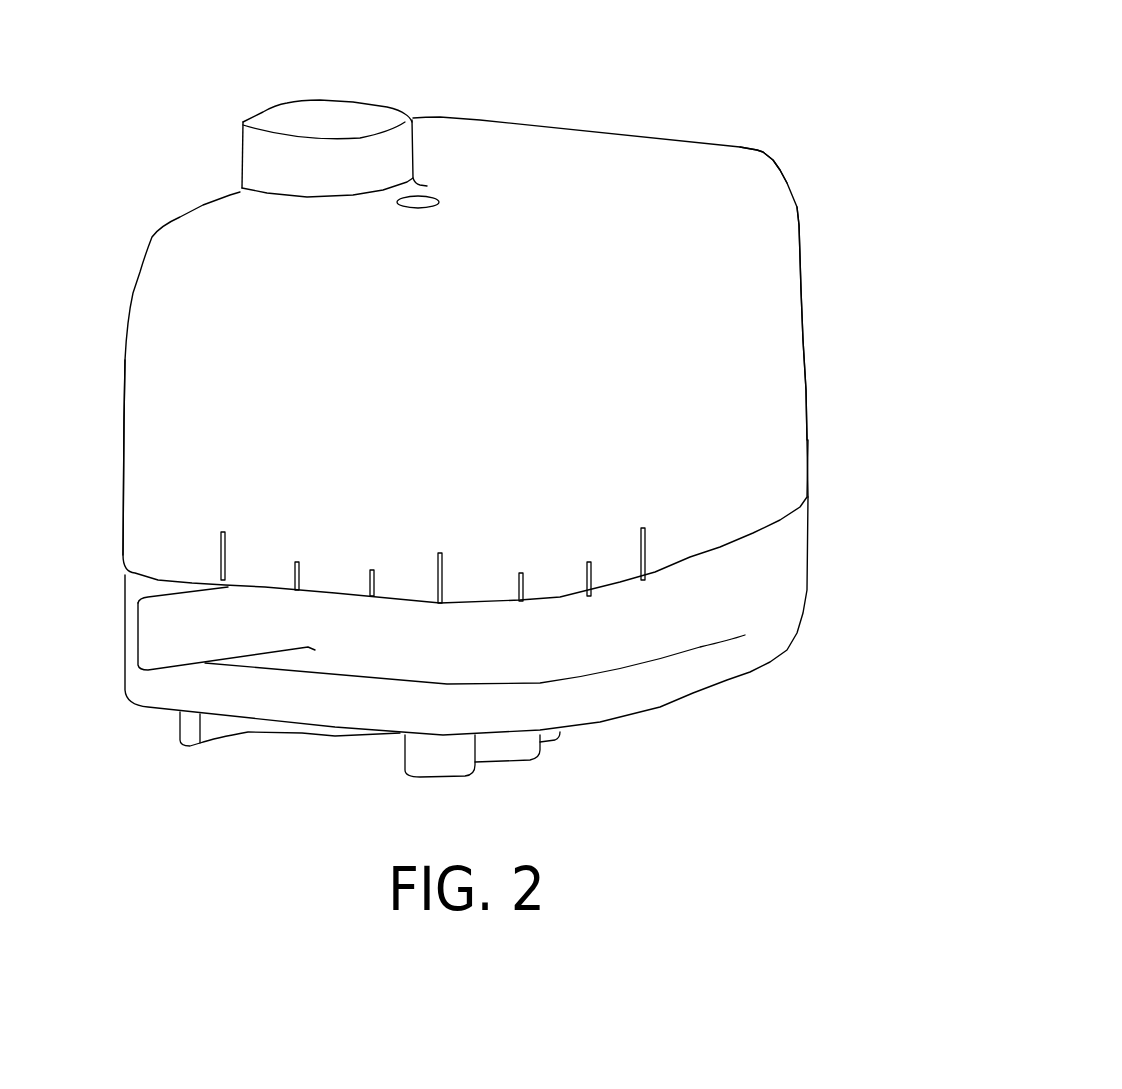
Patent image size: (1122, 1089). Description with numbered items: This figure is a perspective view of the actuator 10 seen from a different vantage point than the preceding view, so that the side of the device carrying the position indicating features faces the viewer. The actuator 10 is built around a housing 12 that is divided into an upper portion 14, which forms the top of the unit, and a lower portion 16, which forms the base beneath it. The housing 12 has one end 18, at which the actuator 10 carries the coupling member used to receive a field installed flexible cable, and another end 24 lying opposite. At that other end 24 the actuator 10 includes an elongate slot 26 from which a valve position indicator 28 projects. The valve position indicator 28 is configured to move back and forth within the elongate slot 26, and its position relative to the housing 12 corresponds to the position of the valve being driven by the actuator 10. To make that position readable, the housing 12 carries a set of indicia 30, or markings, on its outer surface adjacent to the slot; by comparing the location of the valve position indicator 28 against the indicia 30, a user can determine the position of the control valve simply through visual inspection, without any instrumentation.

The actuator 10 is at (665, 93).
The housing 12 is at (800, 138).
The upper portion 14 is at (788, 190).
The lower portion 16 is at (738, 683).
The end 18 is at (805, 388).
The another end 24 is at (160, 415).
The elongate slot 26 is at (356, 647).
The valve position indicator 28 is at (200, 640).
The indicia 30 is at (218, 548).